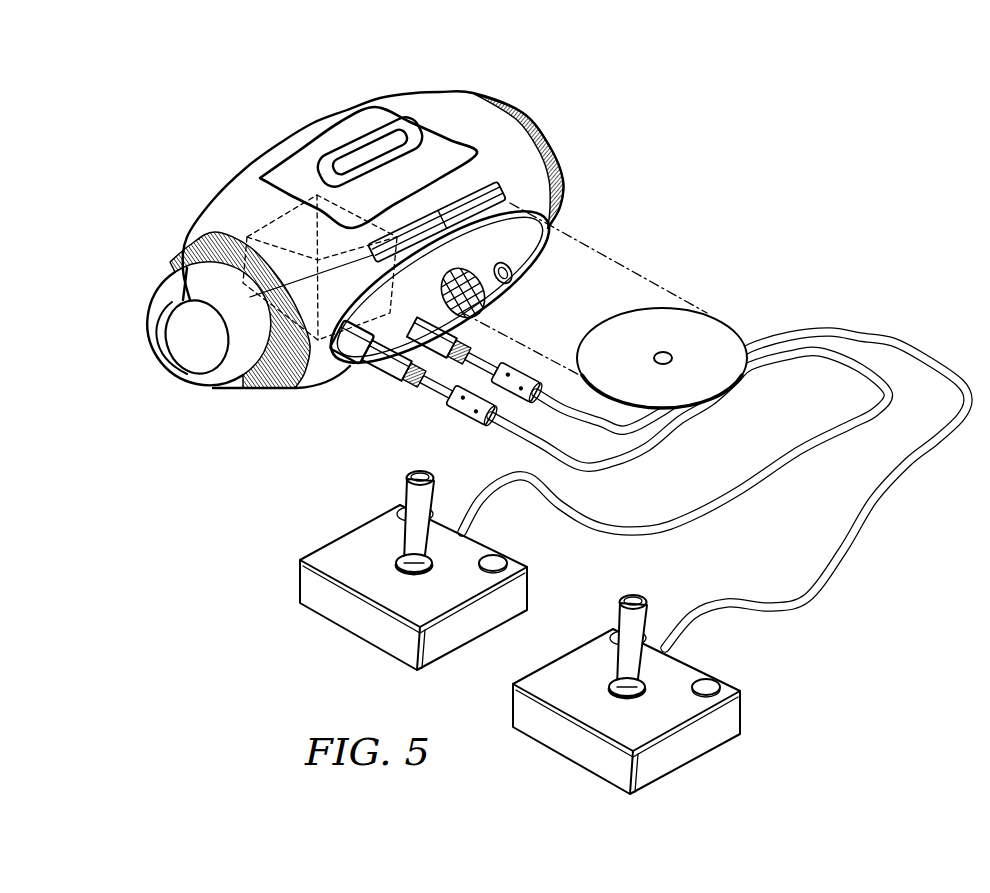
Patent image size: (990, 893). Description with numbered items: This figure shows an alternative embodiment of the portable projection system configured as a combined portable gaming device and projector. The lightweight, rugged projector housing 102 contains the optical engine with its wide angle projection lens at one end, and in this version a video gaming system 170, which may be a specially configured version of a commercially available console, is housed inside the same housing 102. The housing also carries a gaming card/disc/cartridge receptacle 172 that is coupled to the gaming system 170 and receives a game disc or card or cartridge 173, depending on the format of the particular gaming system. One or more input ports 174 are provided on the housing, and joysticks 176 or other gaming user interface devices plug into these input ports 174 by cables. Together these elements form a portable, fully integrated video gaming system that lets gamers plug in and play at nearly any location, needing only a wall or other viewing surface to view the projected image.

The housing 102 is at (437, 102).
The video gaming system 170 is at (277, 232).
The gaming card/disc/cartridge receptacle 172 is at (516, 201).
The game disc or card or cartridge 173 is at (723, 337).
The input ports 174 is at (377, 352).
The joysticks 176 is at (563, 654).